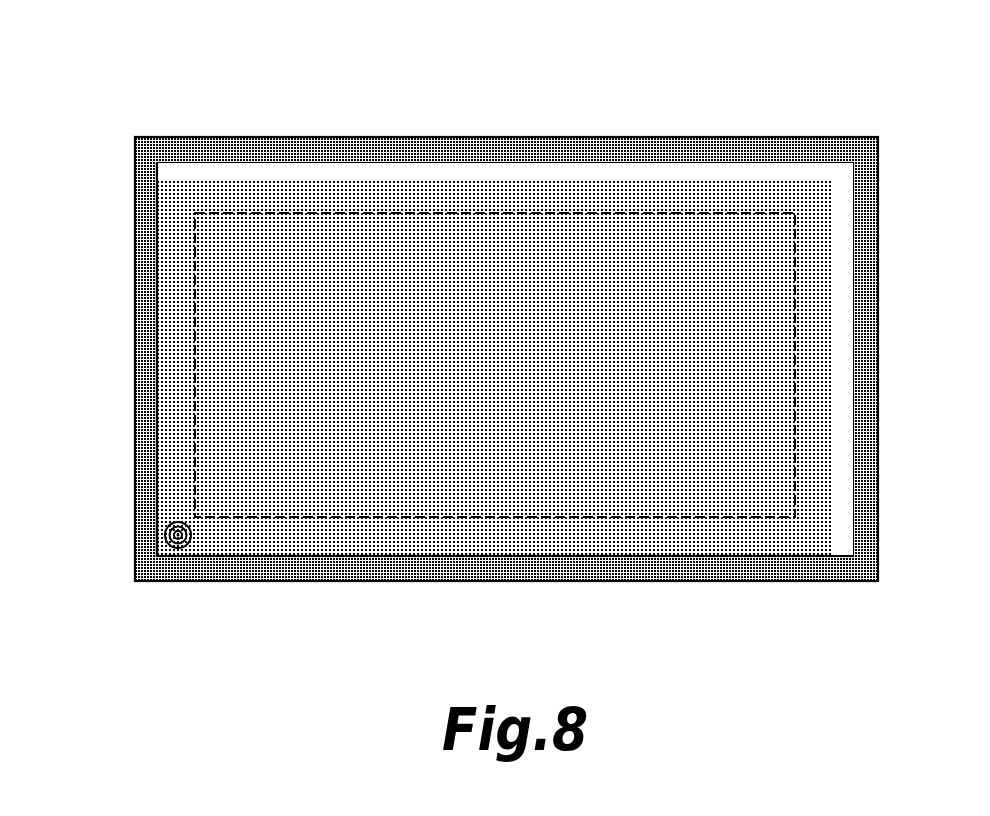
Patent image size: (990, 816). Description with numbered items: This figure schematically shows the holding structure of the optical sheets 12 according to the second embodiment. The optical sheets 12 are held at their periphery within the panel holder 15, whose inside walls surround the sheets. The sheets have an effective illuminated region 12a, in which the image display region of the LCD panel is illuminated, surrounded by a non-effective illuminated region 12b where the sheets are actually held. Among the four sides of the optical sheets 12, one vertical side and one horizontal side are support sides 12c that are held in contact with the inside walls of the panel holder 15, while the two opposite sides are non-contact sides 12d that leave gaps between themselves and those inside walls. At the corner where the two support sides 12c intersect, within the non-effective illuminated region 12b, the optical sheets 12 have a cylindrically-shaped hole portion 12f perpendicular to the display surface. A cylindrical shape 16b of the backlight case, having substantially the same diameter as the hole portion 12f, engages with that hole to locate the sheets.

The optical sheets 12 is at (840, 150).
The effective illuminated region 12a is at (433, 247).
The non-effective illuminated region 12b is at (548, 190).
The support sides 12c is at (157, 290).
The non-contact sides 12d is at (466, 178).
The hole portion 12f is at (189, 547).
The panel holder 15 is at (198, 152).
The cylindrical shape 16b is at (167, 533).